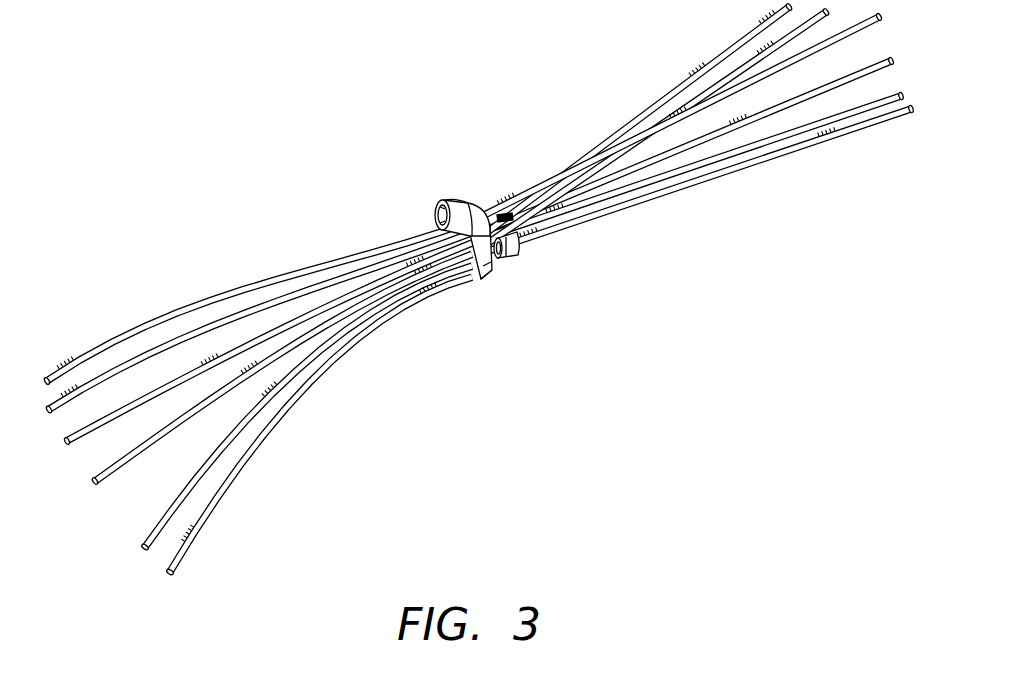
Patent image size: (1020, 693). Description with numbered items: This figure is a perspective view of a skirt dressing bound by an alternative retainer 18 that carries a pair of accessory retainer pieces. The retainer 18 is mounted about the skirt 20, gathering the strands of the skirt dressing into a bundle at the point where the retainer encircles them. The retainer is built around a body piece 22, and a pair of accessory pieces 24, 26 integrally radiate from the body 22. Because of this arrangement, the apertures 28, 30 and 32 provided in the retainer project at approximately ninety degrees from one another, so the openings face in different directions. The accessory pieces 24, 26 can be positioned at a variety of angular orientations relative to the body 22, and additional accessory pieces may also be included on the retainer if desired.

The retainer 18 is at (540, 227).
The skirt 20 is at (833, 153).
The body piece 22 is at (452, 183).
The accessory piece 24 is at (512, 260).
The accessory piece 26 is at (441, 203).
The aperture 28 is at (499, 205).
The aperture 30 is at (480, 281).
The aperture 32 is at (436, 214).